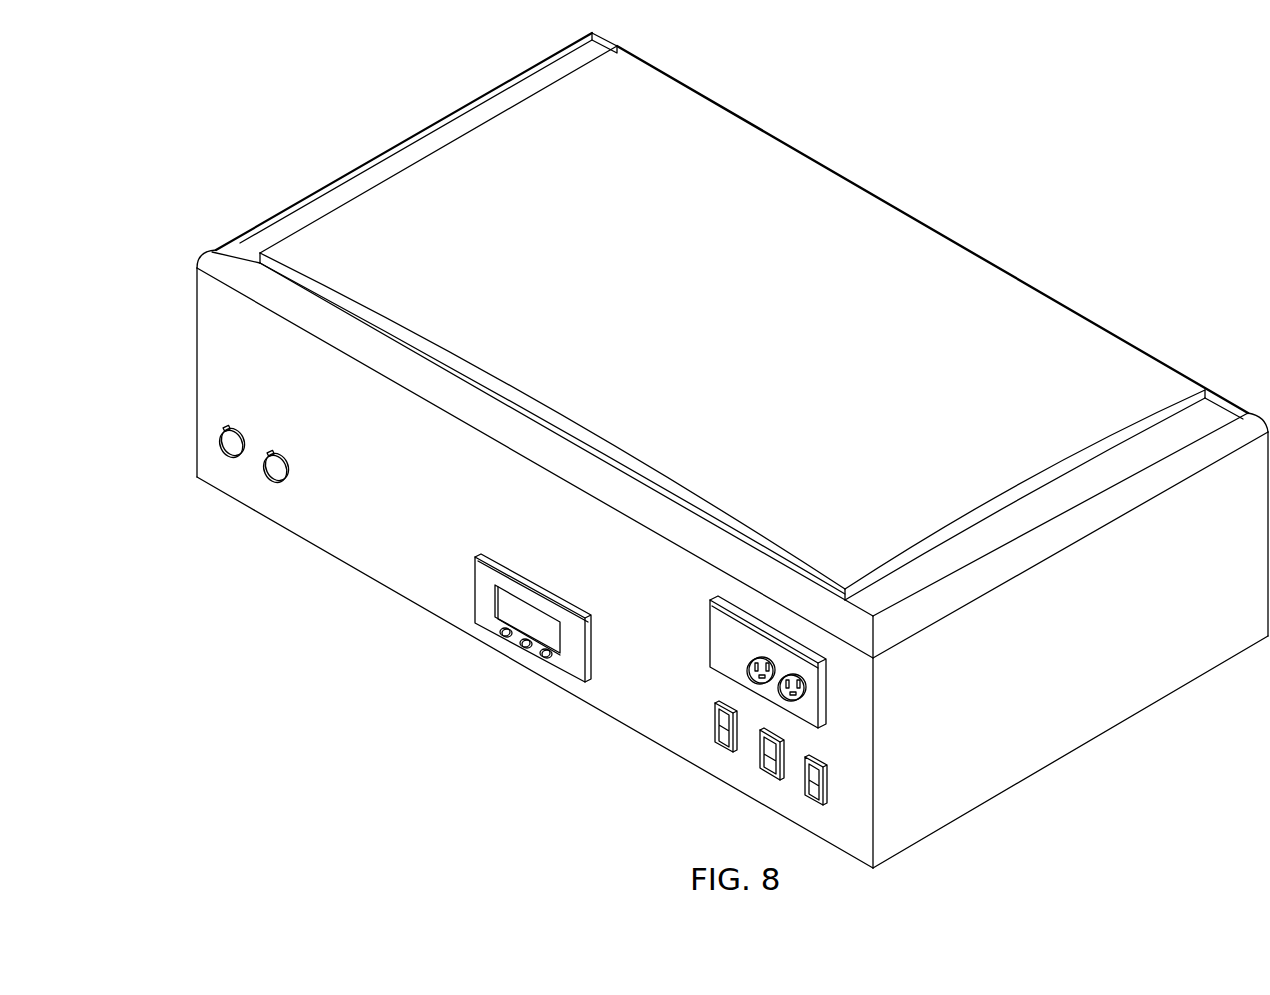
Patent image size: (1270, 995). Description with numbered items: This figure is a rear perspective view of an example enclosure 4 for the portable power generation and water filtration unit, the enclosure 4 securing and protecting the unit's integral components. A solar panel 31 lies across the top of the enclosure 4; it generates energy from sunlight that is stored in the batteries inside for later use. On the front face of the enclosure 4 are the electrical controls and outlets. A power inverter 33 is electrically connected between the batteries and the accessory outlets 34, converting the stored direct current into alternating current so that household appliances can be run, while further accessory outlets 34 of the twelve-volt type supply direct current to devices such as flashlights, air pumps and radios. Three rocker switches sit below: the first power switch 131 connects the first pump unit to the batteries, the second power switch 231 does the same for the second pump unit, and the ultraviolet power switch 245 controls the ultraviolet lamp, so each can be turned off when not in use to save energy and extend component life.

The enclosure 4 is at (1116, 123).
The solar panel 31 is at (863, 212).
The power inverter 33 is at (716, 635).
The accessory outlet 34 is at (239, 427).
The first power switch 131 is at (827, 778).
The second power switch 231 is at (760, 763).
The ultraviolet power switch 245 is at (715, 708).